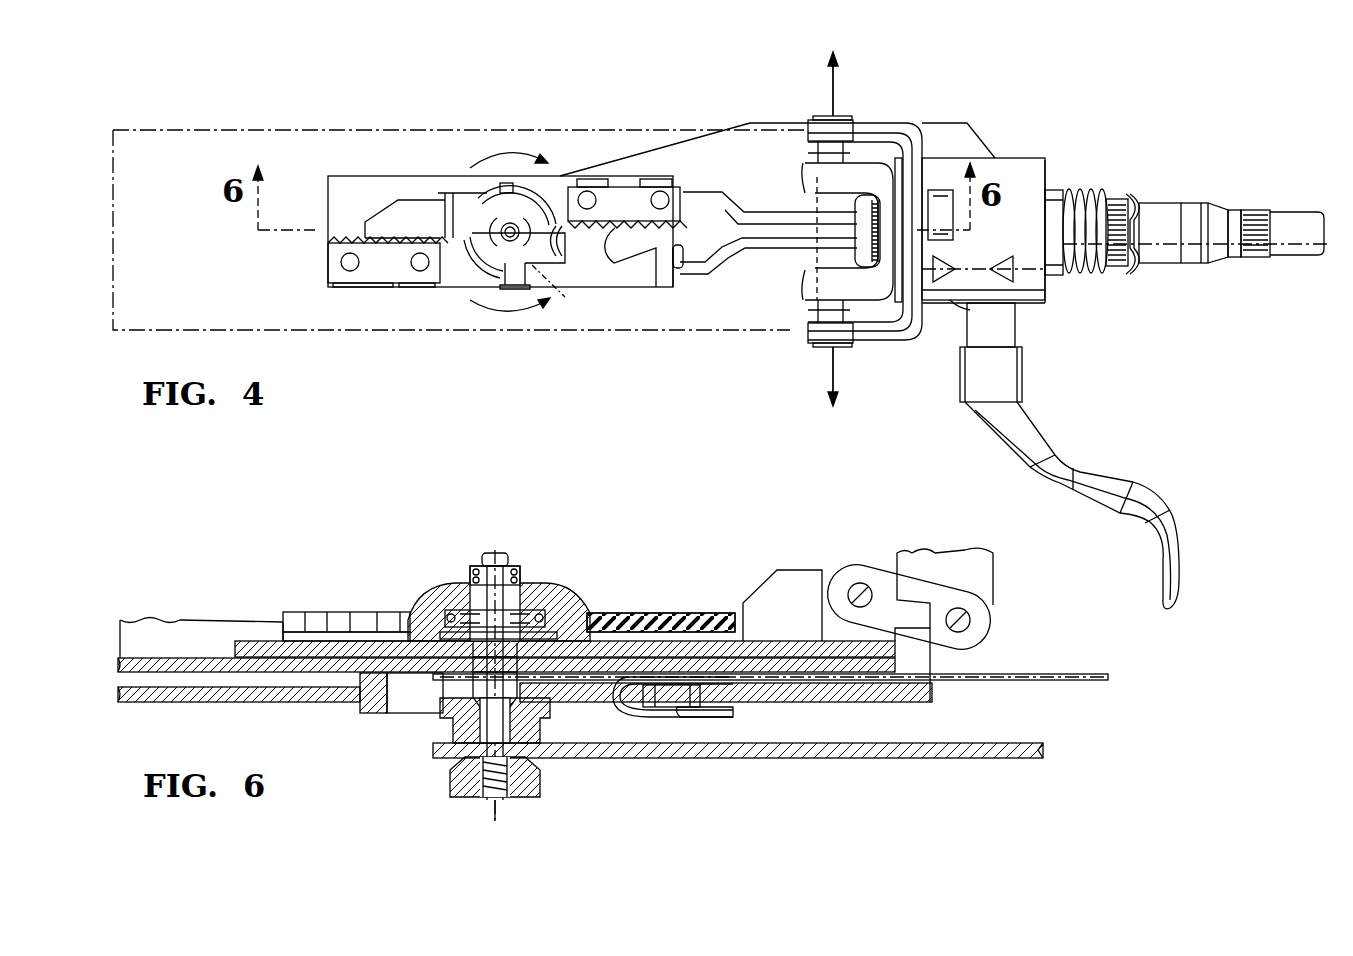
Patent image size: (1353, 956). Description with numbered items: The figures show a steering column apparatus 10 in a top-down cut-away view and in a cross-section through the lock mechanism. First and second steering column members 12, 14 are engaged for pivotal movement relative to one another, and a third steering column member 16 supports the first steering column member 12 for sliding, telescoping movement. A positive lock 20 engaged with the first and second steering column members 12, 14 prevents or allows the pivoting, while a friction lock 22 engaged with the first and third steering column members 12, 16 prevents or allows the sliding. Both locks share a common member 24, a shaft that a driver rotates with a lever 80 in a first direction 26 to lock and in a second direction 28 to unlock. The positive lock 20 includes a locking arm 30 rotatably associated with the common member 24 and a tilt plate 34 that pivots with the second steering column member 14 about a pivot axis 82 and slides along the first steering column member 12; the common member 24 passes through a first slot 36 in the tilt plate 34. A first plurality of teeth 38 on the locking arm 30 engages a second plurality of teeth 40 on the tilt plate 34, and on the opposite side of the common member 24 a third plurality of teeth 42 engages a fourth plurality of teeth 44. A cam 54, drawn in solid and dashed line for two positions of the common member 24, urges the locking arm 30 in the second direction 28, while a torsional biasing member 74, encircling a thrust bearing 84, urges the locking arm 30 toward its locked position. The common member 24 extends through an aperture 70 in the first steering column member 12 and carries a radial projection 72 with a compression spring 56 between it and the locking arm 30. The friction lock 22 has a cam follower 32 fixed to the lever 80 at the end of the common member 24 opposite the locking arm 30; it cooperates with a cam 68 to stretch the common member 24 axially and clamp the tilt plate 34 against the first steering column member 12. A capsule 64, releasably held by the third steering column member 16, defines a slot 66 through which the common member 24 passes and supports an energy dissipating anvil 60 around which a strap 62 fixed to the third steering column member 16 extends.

In FIG. 4, the apparatus 10 is at (904, 88).
In FIG. 4, the first steering column member 12 is at (284, 128).
In FIG. 6, the first steering column member 12 is at (714, 656).
In FIG. 4, the second steering column member 14 is at (918, 140).
In FIG. 6, the third steering column member 16 is at (268, 697).
In FIG. 4, the positive lock 20 is at (438, 146).
In FIG. 6, the positive lock 20 is at (443, 562).
In FIG. 6, the friction lock 22 is at (428, 795).
In FIG. 4, the common member 24 is at (500, 246).
In FIG. 6, the common member 24 is at (488, 558).
In FIG. 4, the first direction 26 is at (517, 313).
In FIG. 4, the second direction 28 is at (468, 164).
In FIG. 4, the locking arm 30 is at (617, 264).
In FIG. 6, the locking arm 30 is at (610, 612).
In FIG. 6, the cam follower 32 is at (530, 762).
In FIG. 4, the tilt plate 34 is at (707, 268).
In FIG. 6, the tilt plate 34 is at (270, 640).
In FIG. 6, the first slot 36 is at (438, 643).
In FIG. 4, the first plurality of teeth 38 is at (610, 256).
In FIG. 4, the second plurality of teeth 40 is at (625, 220).
In FIG. 4, the third plurality of teeth 42 is at (367, 222).
In FIG. 4, the fourth plurality of teeth 44 is at (393, 288).
In FIG. 4, the cam 54 is at (600, 262).
In FIG. 6, the compression spring 56 is at (505, 568).
In FIG. 6, the anvil 60 is at (640, 700).
In FIG. 4, the strap 62 is at (797, 256).
In FIG. 6, the strap 62 is at (668, 692).
In FIG. 6, the capsule 64 is at (370, 702).
In FIG. 6, the slot 66 is at (395, 714).
In FIG. 6, the cam 68 is at (447, 712).
In FIG. 6, the aperture 70 is at (517, 680).
In FIG. 6, the radial projection 72 is at (497, 553).
In FIG. 6, the biasing member 74 is at (546, 614).
In FIG. 4, the lever 80 is at (776, 152).
In FIG. 6, the lever 80 is at (1007, 759).
In FIG. 4, the pivot axis 82 is at (834, 368).
In FIG. 6, the thrust bearing 84 is at (527, 632).